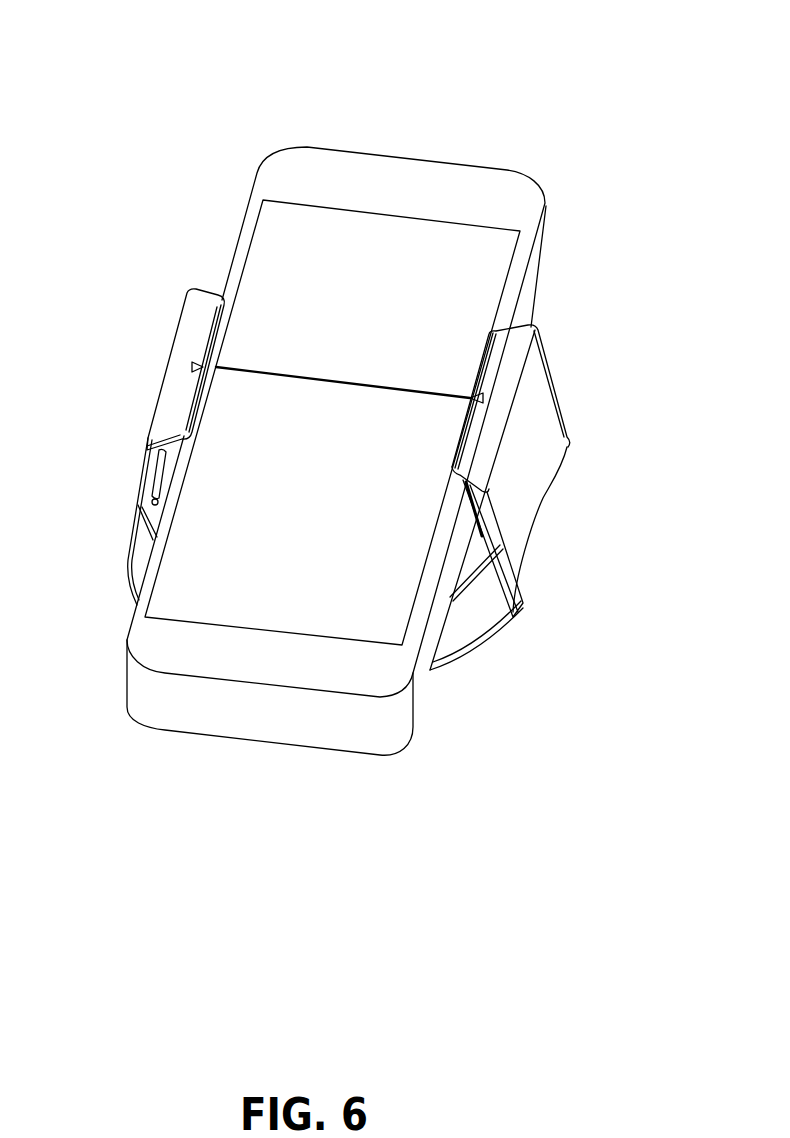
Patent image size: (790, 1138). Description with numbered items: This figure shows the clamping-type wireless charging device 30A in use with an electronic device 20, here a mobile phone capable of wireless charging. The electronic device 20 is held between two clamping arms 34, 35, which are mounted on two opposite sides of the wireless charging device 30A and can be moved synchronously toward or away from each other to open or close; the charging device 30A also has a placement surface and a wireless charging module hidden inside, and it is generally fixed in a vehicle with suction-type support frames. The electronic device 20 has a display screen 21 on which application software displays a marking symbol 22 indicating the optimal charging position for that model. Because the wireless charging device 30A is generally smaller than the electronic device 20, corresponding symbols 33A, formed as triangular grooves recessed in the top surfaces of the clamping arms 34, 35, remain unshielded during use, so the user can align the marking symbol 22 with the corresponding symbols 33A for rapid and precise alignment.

The electronic device 20 is at (400, 180).
The display screen 21 is at (298, 272).
The marking symbol 22 is at (350, 378).
The wireless charging device 30A is at (483, 613).
The corresponding symbol 33A is at (192, 367).
The clamping arm 34 is at (200, 330).
The clamping arm 35 is at (497, 367).